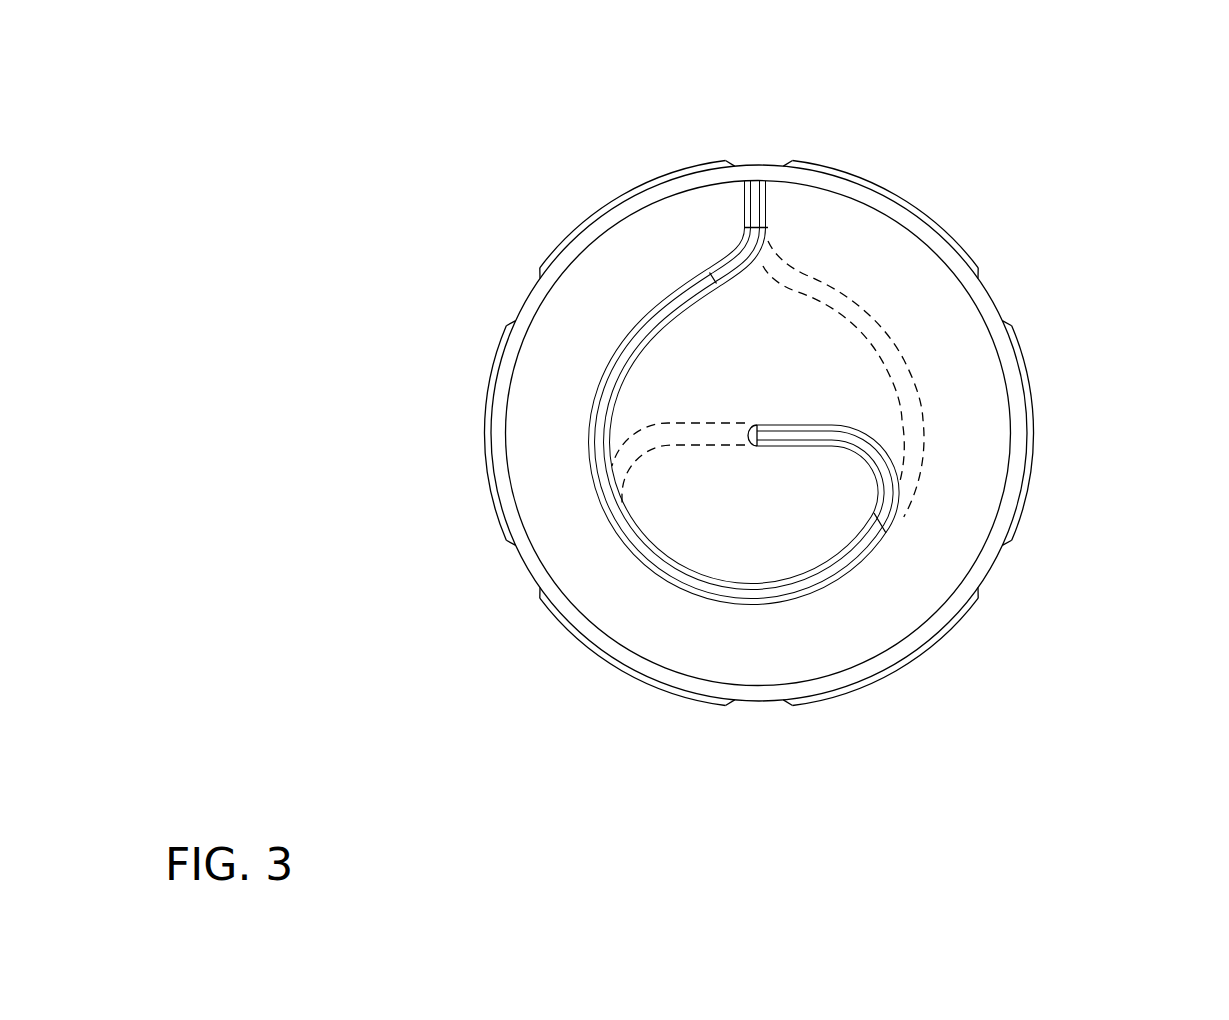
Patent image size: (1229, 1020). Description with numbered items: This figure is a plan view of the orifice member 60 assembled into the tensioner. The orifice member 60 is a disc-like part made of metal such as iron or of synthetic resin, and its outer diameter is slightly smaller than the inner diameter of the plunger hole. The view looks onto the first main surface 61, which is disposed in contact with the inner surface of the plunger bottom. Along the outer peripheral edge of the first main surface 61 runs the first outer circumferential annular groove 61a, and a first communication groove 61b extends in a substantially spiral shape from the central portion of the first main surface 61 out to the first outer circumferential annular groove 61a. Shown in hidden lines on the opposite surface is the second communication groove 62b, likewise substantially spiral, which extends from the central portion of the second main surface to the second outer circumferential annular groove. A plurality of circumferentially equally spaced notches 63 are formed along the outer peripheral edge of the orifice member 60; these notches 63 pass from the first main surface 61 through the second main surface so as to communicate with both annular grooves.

The orifice member 60 is at (772, 441).
The first main surface 61 is at (898, 598).
The first outer circumferential annular groove 61a is at (900, 218).
The first communication groove 61b is at (682, 573).
The second communication groove 62b is at (913, 395).
The notches 63 is at (759, 144).